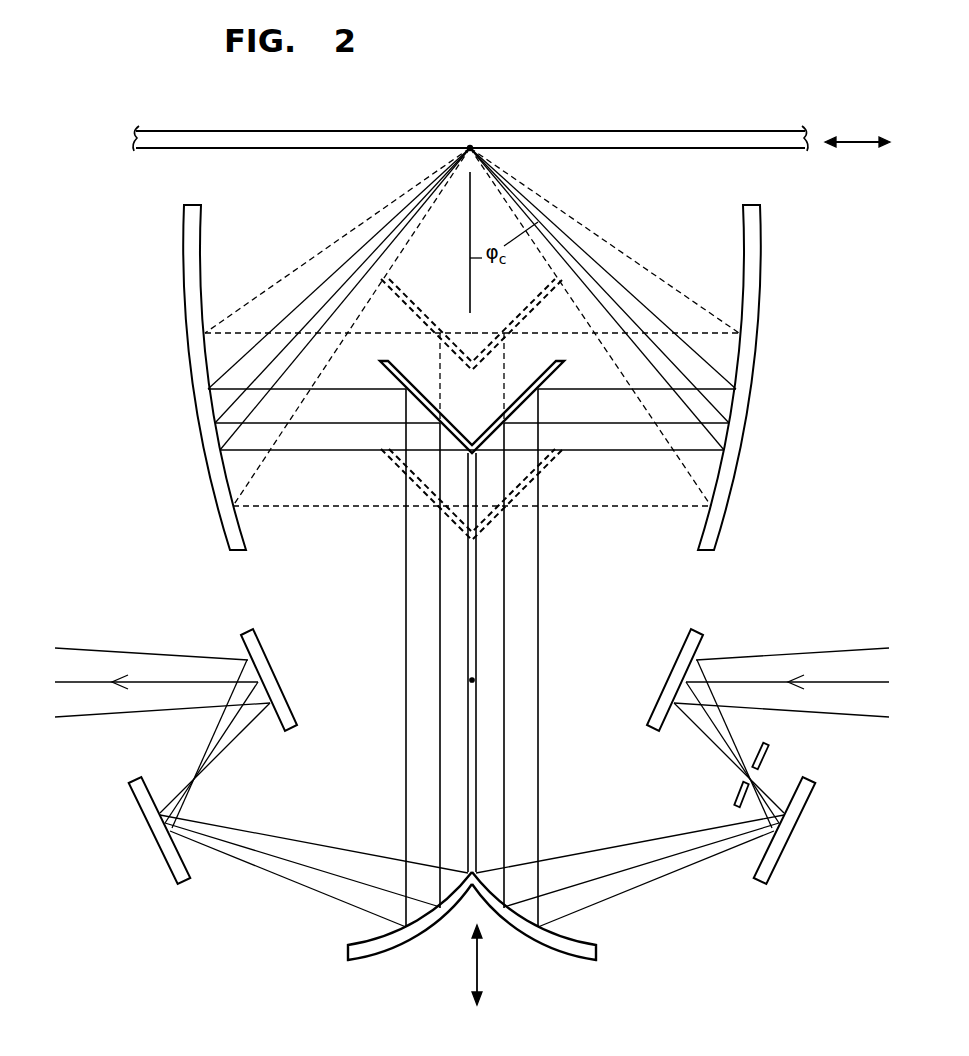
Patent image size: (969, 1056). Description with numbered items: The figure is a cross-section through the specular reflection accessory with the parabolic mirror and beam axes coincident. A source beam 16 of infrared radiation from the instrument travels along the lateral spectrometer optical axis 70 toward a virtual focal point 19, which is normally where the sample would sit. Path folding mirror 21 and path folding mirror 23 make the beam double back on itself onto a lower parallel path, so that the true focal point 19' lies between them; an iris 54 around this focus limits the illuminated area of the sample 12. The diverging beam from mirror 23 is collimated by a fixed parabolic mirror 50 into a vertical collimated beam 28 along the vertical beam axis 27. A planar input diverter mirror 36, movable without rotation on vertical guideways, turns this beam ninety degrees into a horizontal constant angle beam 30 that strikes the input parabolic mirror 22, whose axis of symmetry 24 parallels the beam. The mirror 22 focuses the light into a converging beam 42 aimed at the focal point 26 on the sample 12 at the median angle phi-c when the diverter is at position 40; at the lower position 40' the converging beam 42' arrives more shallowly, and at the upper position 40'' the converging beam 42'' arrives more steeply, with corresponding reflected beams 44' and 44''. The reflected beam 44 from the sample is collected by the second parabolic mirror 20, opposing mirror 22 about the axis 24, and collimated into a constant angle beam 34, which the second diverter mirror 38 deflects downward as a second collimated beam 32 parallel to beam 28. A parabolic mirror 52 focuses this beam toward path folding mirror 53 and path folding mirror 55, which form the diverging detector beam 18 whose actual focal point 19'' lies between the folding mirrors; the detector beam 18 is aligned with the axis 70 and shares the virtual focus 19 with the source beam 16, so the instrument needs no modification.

The sample 12 is at (600, 136).
The focal point 26 is at (476, 141).
The axis of symmetry 24 is at (858, 152).
The second parabolic mirror 20 is at (192, 290).
The input parabolic mirror 22 is at (752, 305).
The reflected beam 44 is at (301, 299).
The converging beam 42 is at (640, 299).
The reflected beam 44'' is at (338, 240).
The converging beam 42'' is at (604, 240).
The reflected beam 44' is at (352, 327).
The converging beam 42' is at (590, 327).
The constant angle beam 34 is at (333, 427).
The constant angle beam 30 is at (592, 423).
The position of diverter mirror 40 is at (493, 404).
The second diverter mirror 38 is at (448, 418).
The input diverter mirror 36 is at (490, 415).
The position of diverter mirror 40'' is at (479, 324).
The position of diverter mirror 40' is at (487, 494).
The second collimated beam 32 is at (406, 630).
The collimated beam 28 is at (522, 622).
The virtual focal point 19 is at (502, 666).
The parabolic mirror 52 is at (357, 937).
The fixed parabolic mirror 50 is at (587, 937).
The beam axis 27 is at (483, 962).
The path folding mirror 53 is at (195, 883).
The path folding mirror 23 is at (767, 875).
The path folding mirror 55 is at (240, 627).
The path folding mirror 21 is at (705, 630).
The actual focal point 19'' is at (217, 744).
The true focal point 19' is at (729, 744).
The iris 54 is at (772, 750).
The detector beam 18 is at (147, 675).
The source beam 16 is at (790, 662).
The spectrometer optical axis 70 is at (823, 682).